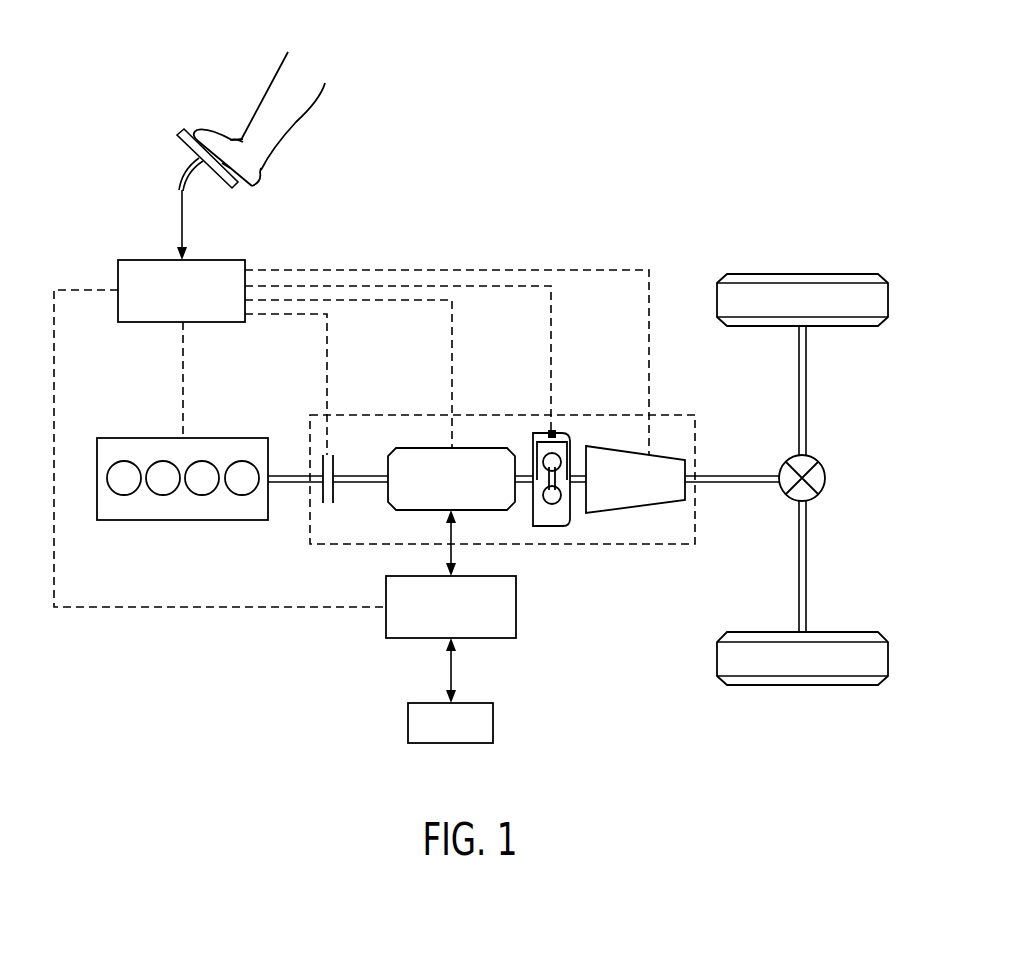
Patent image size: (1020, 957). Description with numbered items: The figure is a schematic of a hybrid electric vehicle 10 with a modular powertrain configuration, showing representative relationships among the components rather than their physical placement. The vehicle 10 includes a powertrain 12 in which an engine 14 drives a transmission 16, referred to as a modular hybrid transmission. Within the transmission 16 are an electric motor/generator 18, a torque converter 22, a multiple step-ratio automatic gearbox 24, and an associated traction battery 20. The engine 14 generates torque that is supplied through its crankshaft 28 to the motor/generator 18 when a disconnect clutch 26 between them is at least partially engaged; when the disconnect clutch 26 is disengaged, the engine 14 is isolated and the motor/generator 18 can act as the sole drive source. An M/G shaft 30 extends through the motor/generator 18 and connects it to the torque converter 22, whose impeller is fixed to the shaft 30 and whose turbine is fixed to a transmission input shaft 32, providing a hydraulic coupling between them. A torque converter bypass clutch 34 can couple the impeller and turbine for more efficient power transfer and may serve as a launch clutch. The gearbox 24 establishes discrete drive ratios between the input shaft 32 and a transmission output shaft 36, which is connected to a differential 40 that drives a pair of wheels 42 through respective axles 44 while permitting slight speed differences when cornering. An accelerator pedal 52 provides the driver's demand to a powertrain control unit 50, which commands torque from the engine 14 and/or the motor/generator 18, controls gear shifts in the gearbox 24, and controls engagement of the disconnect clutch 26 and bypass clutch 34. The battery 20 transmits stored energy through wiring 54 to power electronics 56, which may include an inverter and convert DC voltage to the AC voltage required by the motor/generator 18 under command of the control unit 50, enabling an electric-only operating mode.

The hybrid electric vehicle 10 is at (700, 178).
The powertrain 12 is at (276, 630).
The engine 14 is at (118, 438).
The transmission 16 is at (500, 414).
The electric motor/generator 18 is at (432, 448).
The traction battery 20 is at (408, 724).
The torque converter 22 is at (549, 527).
The gearbox 24 is at (632, 514).
The disconnect clutch 26 is at (323, 500).
The crankshaft 28 is at (291, 474).
The M/G shaft 30 is at (360, 473).
The transmission input shaft 32 is at (578, 470).
The torque converter bypass clutch 34 is at (552, 430).
The transmission output shaft 36 is at (742, 474).
The differential 40 is at (826, 480).
The wheels 42 is at (800, 273).
The axles 44 is at (807, 391).
The powertrain control unit 50 is at (142, 260).
The accelerator pedal 52 is at (181, 141).
The wiring 54 is at (448, 672).
The power electronics 56 is at (516, 608).